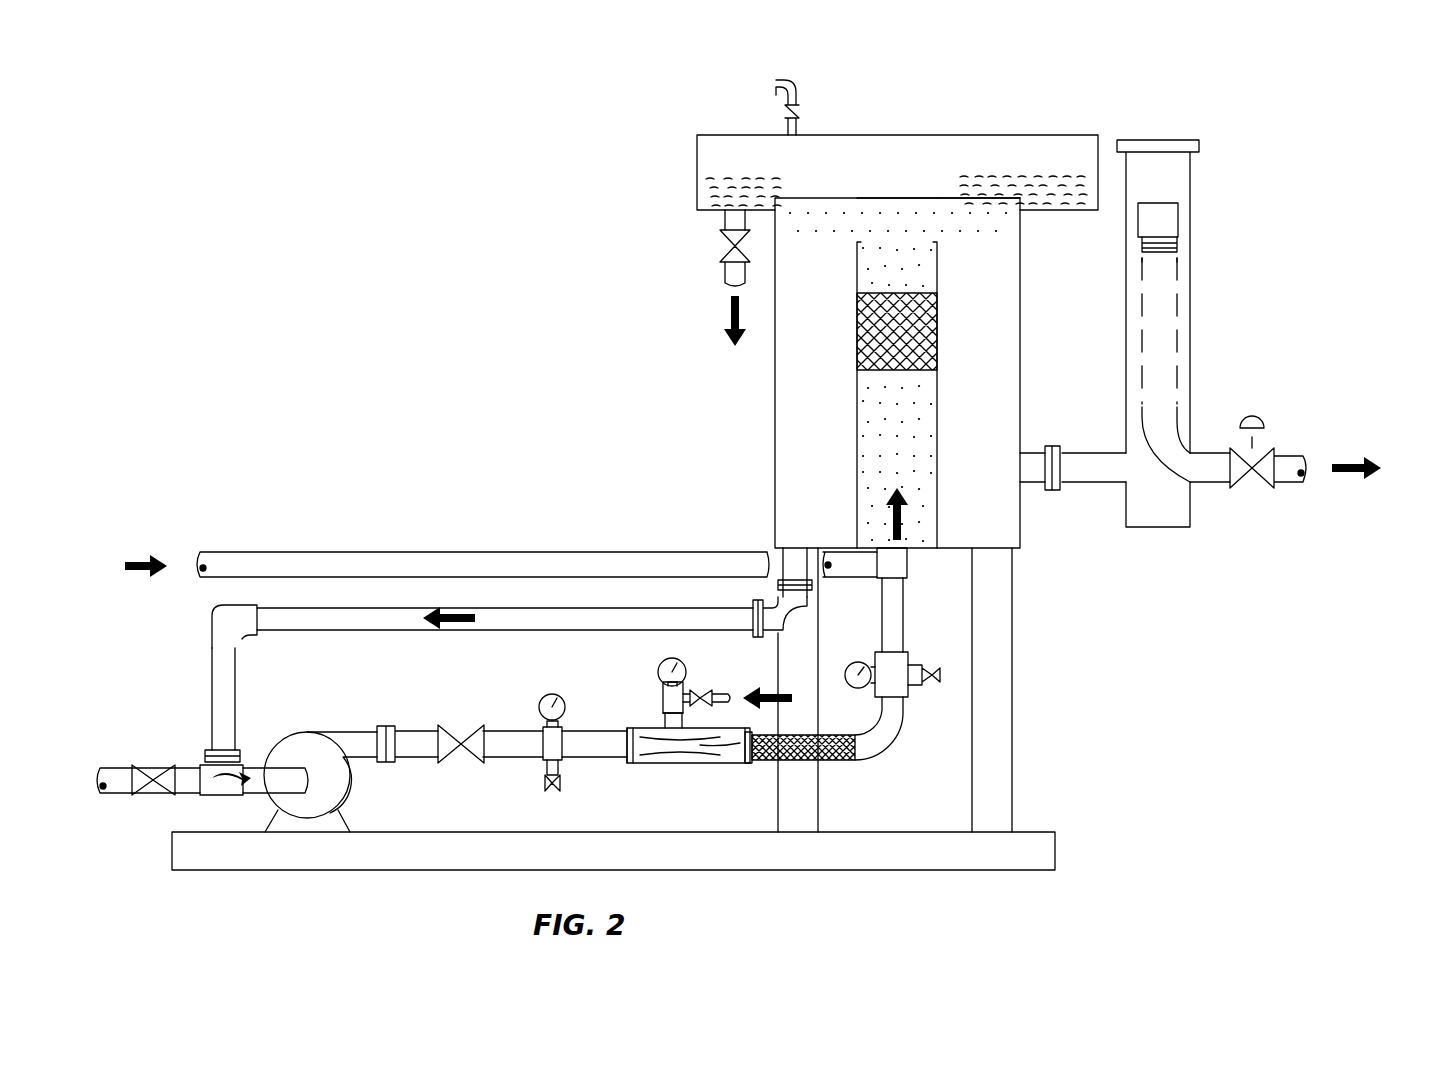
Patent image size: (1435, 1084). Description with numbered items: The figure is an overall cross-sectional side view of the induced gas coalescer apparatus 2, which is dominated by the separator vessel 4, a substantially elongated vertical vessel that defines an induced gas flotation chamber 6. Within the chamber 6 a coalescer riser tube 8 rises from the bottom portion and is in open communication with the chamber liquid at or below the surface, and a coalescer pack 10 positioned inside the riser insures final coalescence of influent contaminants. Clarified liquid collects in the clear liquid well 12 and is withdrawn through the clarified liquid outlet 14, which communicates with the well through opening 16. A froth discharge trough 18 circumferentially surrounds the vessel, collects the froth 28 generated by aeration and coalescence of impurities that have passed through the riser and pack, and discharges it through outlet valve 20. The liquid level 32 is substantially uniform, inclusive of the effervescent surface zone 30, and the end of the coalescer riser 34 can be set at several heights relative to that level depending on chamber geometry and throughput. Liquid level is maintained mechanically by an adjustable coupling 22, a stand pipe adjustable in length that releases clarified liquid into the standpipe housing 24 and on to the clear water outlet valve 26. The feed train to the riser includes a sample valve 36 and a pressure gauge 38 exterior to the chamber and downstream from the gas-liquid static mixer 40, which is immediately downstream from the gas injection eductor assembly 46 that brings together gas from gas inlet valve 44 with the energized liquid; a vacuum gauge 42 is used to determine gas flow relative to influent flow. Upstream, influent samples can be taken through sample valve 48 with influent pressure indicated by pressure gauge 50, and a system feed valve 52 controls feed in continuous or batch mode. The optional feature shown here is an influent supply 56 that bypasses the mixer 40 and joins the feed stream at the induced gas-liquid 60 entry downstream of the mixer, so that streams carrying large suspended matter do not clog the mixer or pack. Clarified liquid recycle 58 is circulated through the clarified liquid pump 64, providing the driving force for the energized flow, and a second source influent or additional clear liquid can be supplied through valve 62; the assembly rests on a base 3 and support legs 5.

The induced gas coalescer apparatus 2 is at (829, 126).
The base 3 is at (1044, 832).
The separator vessel 4 is at (775, 395).
The support legs 5 is at (1012, 655).
The induced gas flotation chamber 6 is at (816, 423).
The coalescer riser tube 8 is at (905, 438).
The coalescer pack 10 is at (939, 346).
The clear liquid well 12 is at (988, 478).
The clarified liquid outlet 14 is at (1080, 453).
The opening 16 is at (1022, 468).
The froth discharge trough 18 is at (697, 198).
The outlet valve 20 is at (722, 248).
The adjustable coupling 22 is at (1179, 259).
The standpipe housing 24 is at (1190, 352).
The clear water outlet valve 26 is at (1256, 425).
The froth 28 is at (1048, 167).
The effervescent surface zone 30 is at (868, 197).
The liquid level 32 is at (925, 195).
The end of the coalescer riser 34 is at (938, 244).
The sample valve 36 is at (938, 685).
The pressure gauge 38 is at (862, 662).
The gas-liquid static mixer 40 is at (833, 760).
The vacuum gauge 42 is at (666, 658).
The gas inlet valve 44 is at (712, 694).
The gas injection eductor assembly 46 is at (692, 763).
The sample valve 48 is at (549, 792).
The pressure gauge 50 is at (544, 696).
The system feed valve 52 is at (454, 725).
The influent supply 56 is at (293, 550).
The clarified liquid recycle 58 is at (333, 630).
The induced gas-liquid 60 is at (907, 558).
The valve 62 is at (161, 804).
The clarified liquid pump 64 is at (300, 732).